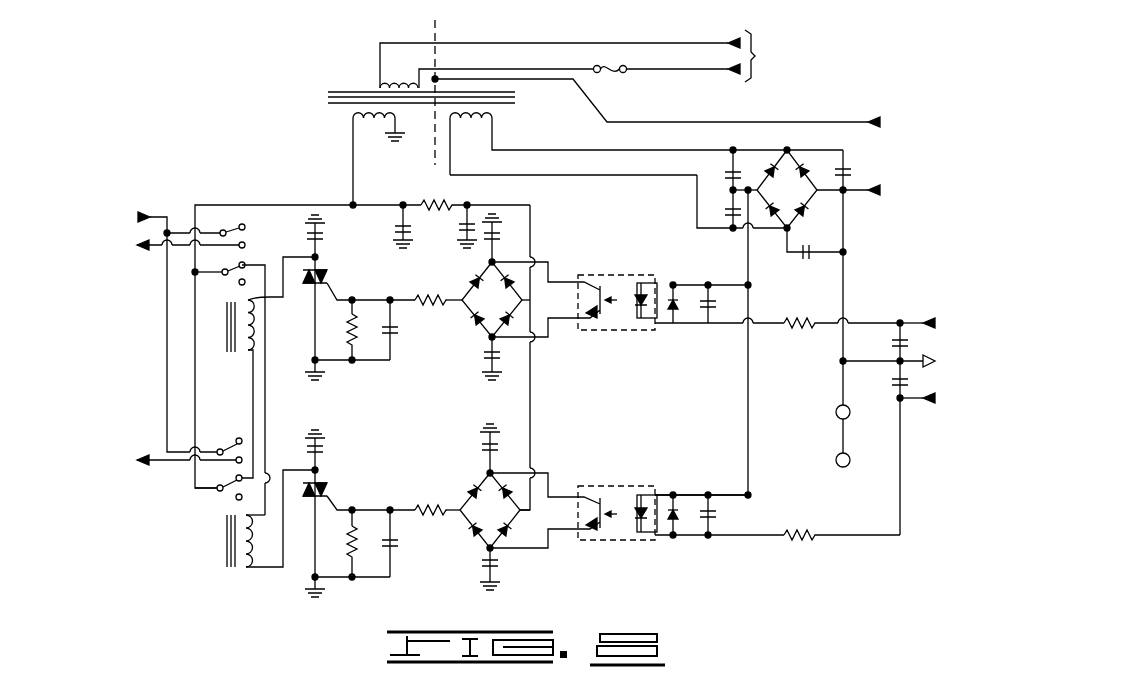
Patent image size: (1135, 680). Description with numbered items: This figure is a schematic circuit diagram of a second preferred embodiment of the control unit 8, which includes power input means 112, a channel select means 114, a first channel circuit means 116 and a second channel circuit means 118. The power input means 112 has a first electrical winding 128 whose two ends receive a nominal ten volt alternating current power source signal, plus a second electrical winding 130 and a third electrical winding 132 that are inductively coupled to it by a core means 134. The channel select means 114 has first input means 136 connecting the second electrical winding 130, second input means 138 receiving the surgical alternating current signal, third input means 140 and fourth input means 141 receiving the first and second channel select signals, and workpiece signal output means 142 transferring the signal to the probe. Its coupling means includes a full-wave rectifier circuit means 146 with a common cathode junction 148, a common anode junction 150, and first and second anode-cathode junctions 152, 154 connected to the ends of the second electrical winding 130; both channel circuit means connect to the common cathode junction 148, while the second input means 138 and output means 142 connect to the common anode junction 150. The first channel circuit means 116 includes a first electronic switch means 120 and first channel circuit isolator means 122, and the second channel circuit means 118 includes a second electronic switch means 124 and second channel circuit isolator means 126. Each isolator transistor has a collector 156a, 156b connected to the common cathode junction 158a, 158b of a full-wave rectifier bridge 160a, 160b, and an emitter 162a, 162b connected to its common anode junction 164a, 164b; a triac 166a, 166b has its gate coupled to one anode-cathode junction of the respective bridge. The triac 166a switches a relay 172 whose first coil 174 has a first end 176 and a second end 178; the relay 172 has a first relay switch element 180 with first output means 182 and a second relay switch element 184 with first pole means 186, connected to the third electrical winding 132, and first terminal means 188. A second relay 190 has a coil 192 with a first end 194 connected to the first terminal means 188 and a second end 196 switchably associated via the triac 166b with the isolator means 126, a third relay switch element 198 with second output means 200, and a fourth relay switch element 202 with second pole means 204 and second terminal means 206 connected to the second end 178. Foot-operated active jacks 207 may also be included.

The control unit 8 is at (536, 321).
The power input means 112 is at (604, 107).
The channel select means 114 is at (817, 398).
The first channel circuit means 116 is at (207, 379).
The second channel circuit means 118 is at (228, 551).
The first electronic switch means 120 is at (416, 298).
The first channel circuit isolator means 122 is at (634, 343).
The second electronic switch means 124 is at (381, 513).
The second channel circuit isolator means 126 is at (647, 471).
The first electrical winding 128 is at (380, 83).
The second electrical winding 130 is at (487, 120).
The third electrical winding 132 is at (371, 122).
The core means 134 is at (330, 104).
The first input means 136 is at (690, 228).
The second input means 138 is at (858, 197).
The third input means 140 is at (915, 320).
The fourth input means 141 is at (907, 402).
The workpiece signal output means 142 is at (908, 404).
The full-wave rectifier circuit means 146 is at (781, 261).
The common cathode junction 148 is at (756, 188).
The common anode junction 150 is at (818, 188).
The first anode-cathode junction 152 is at (789, 152).
The second anode-cathode junction 154 is at (796, 229).
The collector 156a is at (595, 318).
The collector 156b is at (617, 508).
The common cathode junction 158a is at (494, 290).
The common cathode junction 158b is at (496, 487).
The full-wave rectifier bridge 160a is at (470, 330).
The full-wave rectifier bridge 160b is at (466, 489).
The emitter 162a is at (596, 322).
The emitter 162b is at (597, 533).
The common anode junction 164a is at (494, 342).
The common anode junction 164b is at (495, 552).
The triac 166a is at (325, 278).
The triac 166b is at (325, 490).
The relay 172 is at (223, 196).
The first coil 174 is at (258, 324).
The first end 176 is at (266, 300).
The second end 178 is at (240, 357).
The first relay switch element 180 is at (237, 226).
The first output means 182 is at (248, 243).
The second relay switch element 184 is at (218, 284).
The first pole means 186 is at (238, 263).
The first terminal means 188 is at (240, 270).
The second relay 190 is at (226, 574).
The coil 192 is at (264, 541).
The first end 194 is at (250, 508).
The second end 196 is at (251, 574).
The third relay switch element 198 is at (232, 437).
The second output means 200 is at (214, 469).
The fourth relay switch element 202 is at (226, 498).
The second pole means 204 is at (230, 481).
The second terminal means 206 is at (263, 470).
The active jacks 207 is at (843, 437).